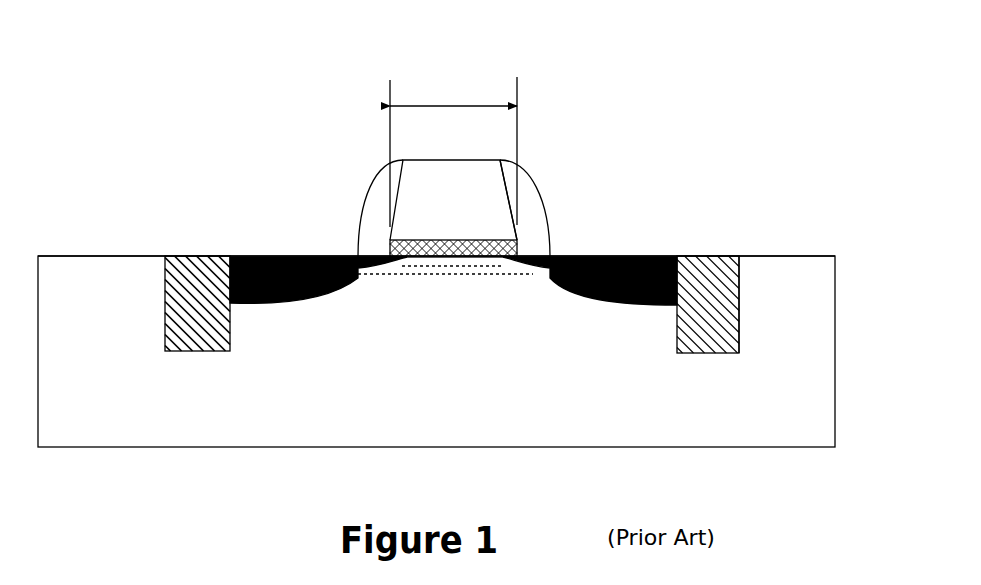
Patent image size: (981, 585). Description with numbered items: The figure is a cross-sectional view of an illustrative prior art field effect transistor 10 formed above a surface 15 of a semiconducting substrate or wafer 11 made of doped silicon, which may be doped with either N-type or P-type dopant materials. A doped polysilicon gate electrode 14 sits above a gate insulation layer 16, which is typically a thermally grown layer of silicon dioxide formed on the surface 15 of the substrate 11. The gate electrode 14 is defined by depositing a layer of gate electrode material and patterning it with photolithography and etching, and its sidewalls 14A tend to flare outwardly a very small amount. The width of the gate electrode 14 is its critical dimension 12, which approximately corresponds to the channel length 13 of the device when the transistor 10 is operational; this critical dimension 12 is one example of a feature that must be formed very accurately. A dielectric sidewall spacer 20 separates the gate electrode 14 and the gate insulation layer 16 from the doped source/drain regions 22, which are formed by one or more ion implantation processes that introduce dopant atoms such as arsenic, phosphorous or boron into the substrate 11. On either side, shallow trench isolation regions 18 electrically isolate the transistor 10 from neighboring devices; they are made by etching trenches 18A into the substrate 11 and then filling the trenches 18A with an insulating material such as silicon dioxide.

The field effect transistor 10 is at (355, 133).
The semiconducting substrate 11 is at (708, 432).
The critical dimension 12 is at (455, 105).
The channel length 13 is at (452, 275).
The gate electrode 14 is at (487, 213).
The sidewalls 14A is at (505, 185).
The surface 15 is at (795, 258).
The gate insulation layer 16 is at (492, 250).
The shallow trench isolation regions 18 is at (197, 278).
The trenches 18A is at (740, 323).
The dielectric sidewall spacer 20 is at (373, 208).
The source/drain regions 22 is at (285, 255).